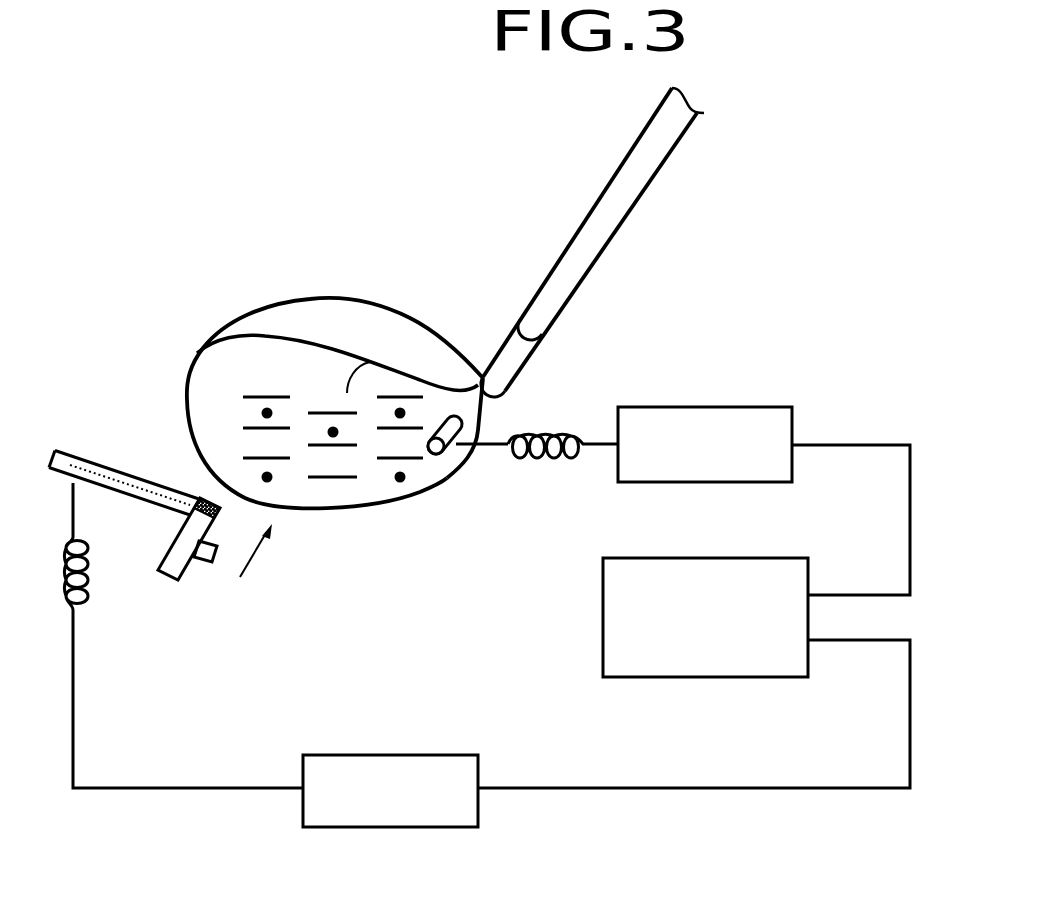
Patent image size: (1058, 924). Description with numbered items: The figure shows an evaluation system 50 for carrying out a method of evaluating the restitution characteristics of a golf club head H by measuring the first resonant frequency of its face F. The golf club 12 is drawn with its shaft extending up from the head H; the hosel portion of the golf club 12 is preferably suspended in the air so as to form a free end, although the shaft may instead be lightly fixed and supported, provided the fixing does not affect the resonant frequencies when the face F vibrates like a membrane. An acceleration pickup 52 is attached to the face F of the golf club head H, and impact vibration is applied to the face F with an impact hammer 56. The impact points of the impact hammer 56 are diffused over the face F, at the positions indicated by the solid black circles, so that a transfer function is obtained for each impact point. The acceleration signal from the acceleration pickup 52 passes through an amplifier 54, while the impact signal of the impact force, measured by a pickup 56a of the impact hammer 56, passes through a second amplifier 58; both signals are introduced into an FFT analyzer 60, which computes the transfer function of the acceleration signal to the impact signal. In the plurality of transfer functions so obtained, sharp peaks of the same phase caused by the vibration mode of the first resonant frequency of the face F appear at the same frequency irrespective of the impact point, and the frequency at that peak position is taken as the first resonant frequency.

The golf club 12 is at (628, 248).
The evaluation system 50 is at (773, 291).
The acceleration pickup 52 is at (442, 457).
The amplifier 54 is at (617, 468).
The impact hammer 56 is at (183, 580).
The pickup of the impact hammer 56a is at (200, 499).
The amplifier 58 is at (400, 755).
The FFT analyzer 60 is at (603, 607).
The golf club head H is at (338, 298).
The face F is at (370, 362).